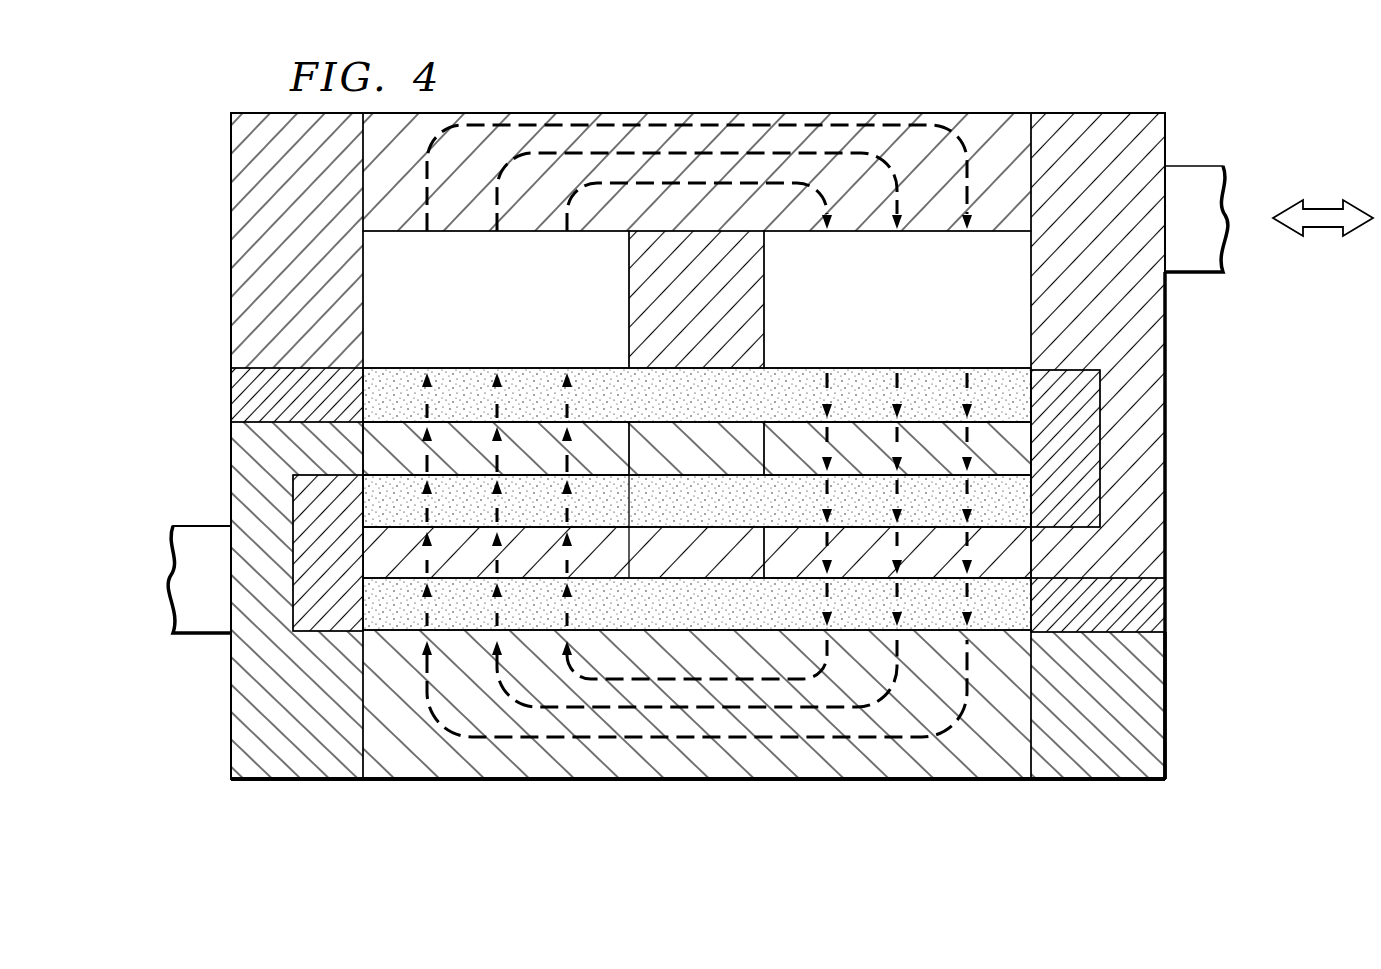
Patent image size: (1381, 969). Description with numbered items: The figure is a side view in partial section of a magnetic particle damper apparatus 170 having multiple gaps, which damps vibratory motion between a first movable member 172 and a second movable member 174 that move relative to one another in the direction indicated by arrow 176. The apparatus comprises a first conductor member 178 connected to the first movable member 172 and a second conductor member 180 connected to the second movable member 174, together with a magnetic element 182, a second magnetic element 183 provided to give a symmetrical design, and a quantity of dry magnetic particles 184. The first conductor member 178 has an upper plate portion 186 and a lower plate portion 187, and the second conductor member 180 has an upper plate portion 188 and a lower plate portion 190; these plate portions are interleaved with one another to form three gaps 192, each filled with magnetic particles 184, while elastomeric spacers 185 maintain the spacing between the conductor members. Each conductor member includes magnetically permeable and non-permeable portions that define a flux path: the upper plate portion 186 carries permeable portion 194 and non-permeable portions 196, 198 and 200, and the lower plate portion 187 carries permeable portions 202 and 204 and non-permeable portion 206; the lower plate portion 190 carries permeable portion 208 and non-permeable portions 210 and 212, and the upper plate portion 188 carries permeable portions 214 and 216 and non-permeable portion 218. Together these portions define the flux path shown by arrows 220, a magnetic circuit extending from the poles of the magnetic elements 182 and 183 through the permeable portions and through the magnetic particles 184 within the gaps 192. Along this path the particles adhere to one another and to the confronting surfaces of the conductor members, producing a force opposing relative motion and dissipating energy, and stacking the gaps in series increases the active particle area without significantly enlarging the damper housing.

The magnetic particle damper apparatus 170 is at (1058, 72).
The first movable member 172 is at (1192, 178).
The second movable member 174 is at (185, 573).
The arrow 176 is at (1320, 208).
The first conductor member 178 is at (880, 96).
The second conductor member 180 is at (838, 792).
The magnetic element 182 is at (464, 311).
The second magnetic element 183 is at (879, 312).
The magnetic particles 184 is at (679, 408).
The elastomeric spacers 185 is at (250, 397).
The upper plate portion 186 is at (229, 251).
The lower plate portion 187 is at (358, 543).
The upper plate portion 188 is at (1017, 438).
The lower plate portion 190 is at (1168, 671).
The gaps 192 is at (1020, 392).
The permeable portion 194 is at (984, 122).
The non-permeable portion 196 is at (240, 162).
The non-permeable portion 198 is at (662, 314).
The non-permeable portion 200 is at (1140, 122).
The permeable portion 202 is at (1017, 552).
The permeable portion 204 is at (415, 520).
The non-permeable portion 206 is at (679, 567).
The permeable portion 208 is at (994, 768).
The non-permeable portion 210 is at (1155, 725).
The non-permeable portion 212 is at (245, 722).
The permeable portion 214 is at (410, 440).
The permeable portion 216 is at (1036, 447).
The non-permeable portion 218 is at (679, 462).
The magnetic flux path 220 is at (533, 124).